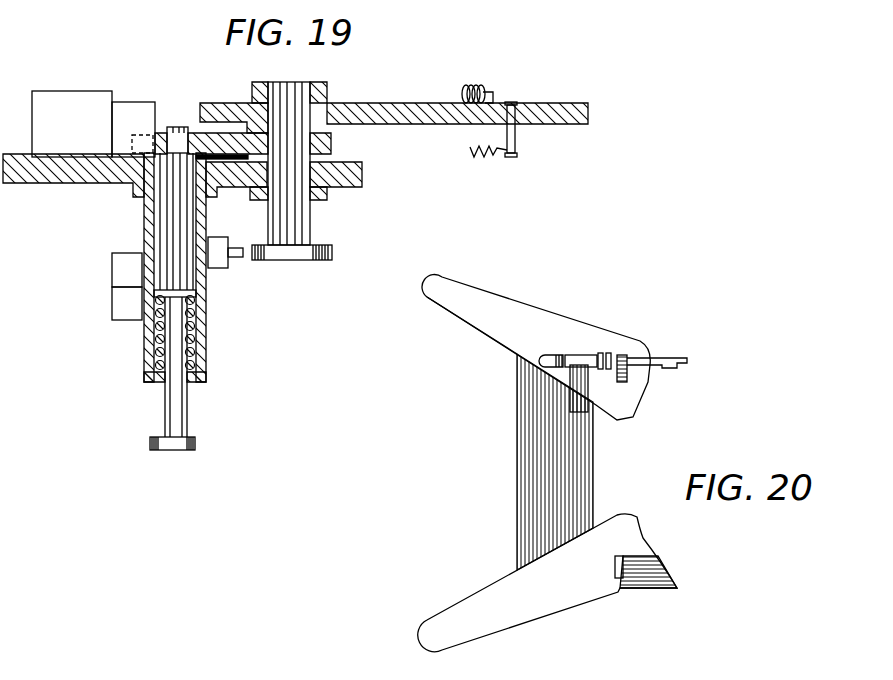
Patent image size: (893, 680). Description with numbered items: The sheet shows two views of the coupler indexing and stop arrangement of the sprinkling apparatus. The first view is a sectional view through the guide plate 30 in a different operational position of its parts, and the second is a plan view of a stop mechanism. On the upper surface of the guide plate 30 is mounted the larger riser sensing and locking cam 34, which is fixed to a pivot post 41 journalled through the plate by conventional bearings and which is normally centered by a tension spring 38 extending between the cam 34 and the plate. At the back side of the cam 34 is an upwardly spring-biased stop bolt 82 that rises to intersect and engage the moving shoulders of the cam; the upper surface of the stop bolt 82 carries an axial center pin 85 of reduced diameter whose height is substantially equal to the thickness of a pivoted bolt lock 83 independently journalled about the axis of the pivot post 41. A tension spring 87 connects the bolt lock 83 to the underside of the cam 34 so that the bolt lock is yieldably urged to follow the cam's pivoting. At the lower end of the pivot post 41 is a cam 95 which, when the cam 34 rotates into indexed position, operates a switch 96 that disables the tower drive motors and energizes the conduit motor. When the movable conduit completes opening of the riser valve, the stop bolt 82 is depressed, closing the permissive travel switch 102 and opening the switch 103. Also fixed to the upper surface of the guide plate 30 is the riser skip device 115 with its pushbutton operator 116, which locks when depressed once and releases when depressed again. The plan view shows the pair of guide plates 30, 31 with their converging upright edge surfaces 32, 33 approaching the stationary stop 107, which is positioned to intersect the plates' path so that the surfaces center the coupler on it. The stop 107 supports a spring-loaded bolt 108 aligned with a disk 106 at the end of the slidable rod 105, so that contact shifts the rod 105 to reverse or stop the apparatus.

In FIG. 19, the guide plate 30 is at (90, 183).
In FIG. 20, the guide plate 30 is at (602, 305).
In FIG. 20, the guide plate 31 is at (641, 551).
In FIG. 20, the converging upright edge surface 32 is at (498, 344).
In FIG. 20, the converging upright edge surface 33 is at (478, 594).
In FIG. 19, the riser sensing and locking cam 34 is at (430, 103).
In FIG. 19, the tension spring 38 is at (479, 84).
In FIG. 19, the pivot post 41 is at (300, 223).
In FIG. 19, the stop bolt 82 is at (163, 212).
In FIG. 19, the bolt lock 83 is at (217, 142).
In FIG. 19, the axial center pin 85 is at (180, 126).
In FIG. 19, the tension spring 87 is at (499, 160).
In FIG. 19, the cam 95 is at (311, 258).
In FIG. 19, the switch 96 is at (222, 268).
In FIG. 19, the permissive travel switch 102 is at (118, 307).
In FIG. 19, the switch 103 is at (118, 273).
In FIG. 20, the slidable rod 105 is at (684, 359).
In FIG. 20, the disk 106 is at (611, 357).
In FIG. 20, the stationary stop 107 is at (596, 444).
In FIG. 20, the spring-loaded bolt 108 is at (562, 353).
In FIG. 19, the mechanical device 115 is at (103, 74).
In FIG. 19, the operator 116 is at (132, 148).